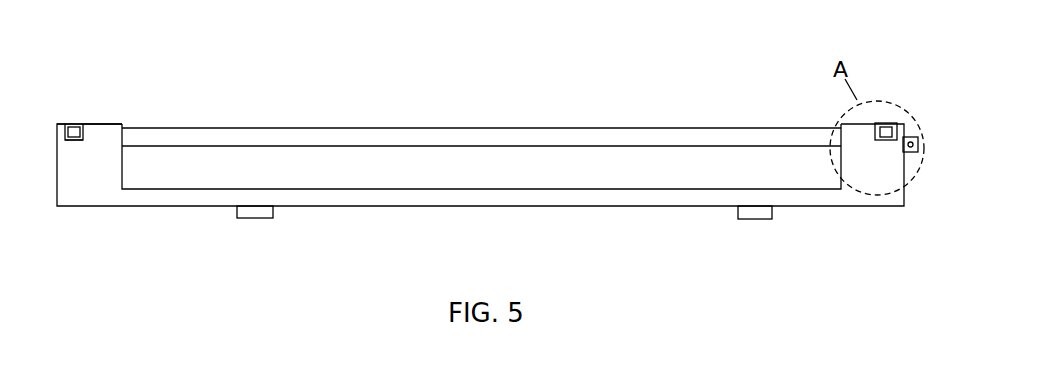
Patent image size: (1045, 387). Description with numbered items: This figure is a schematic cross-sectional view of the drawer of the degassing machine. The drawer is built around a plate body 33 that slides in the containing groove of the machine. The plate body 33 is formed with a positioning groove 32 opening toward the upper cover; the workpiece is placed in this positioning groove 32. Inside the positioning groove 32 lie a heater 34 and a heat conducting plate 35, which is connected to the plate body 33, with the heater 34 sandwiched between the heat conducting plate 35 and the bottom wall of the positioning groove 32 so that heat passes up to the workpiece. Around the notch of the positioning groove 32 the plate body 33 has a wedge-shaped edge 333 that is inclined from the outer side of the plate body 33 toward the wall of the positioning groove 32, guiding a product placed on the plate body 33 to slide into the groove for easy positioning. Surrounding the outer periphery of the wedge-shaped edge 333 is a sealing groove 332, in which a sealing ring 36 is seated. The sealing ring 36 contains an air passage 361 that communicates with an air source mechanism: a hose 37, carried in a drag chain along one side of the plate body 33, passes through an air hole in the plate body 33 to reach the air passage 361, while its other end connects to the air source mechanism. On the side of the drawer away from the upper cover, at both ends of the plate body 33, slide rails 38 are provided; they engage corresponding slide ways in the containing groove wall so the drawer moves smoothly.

The positioning groove 32 is at (163, 190).
The plate body 33 is at (838, 193).
The sealing groove 332 is at (63, 123).
The wedge-shaped edge 333 is at (103, 125).
The heater 34 is at (452, 156).
The heat conducting plate 35 is at (373, 127).
The sealing ring 36 is at (77, 133).
The air passage 361 is at (77, 141).
The hose 37 is at (907, 137).
The slide rail 38 is at (757, 219).